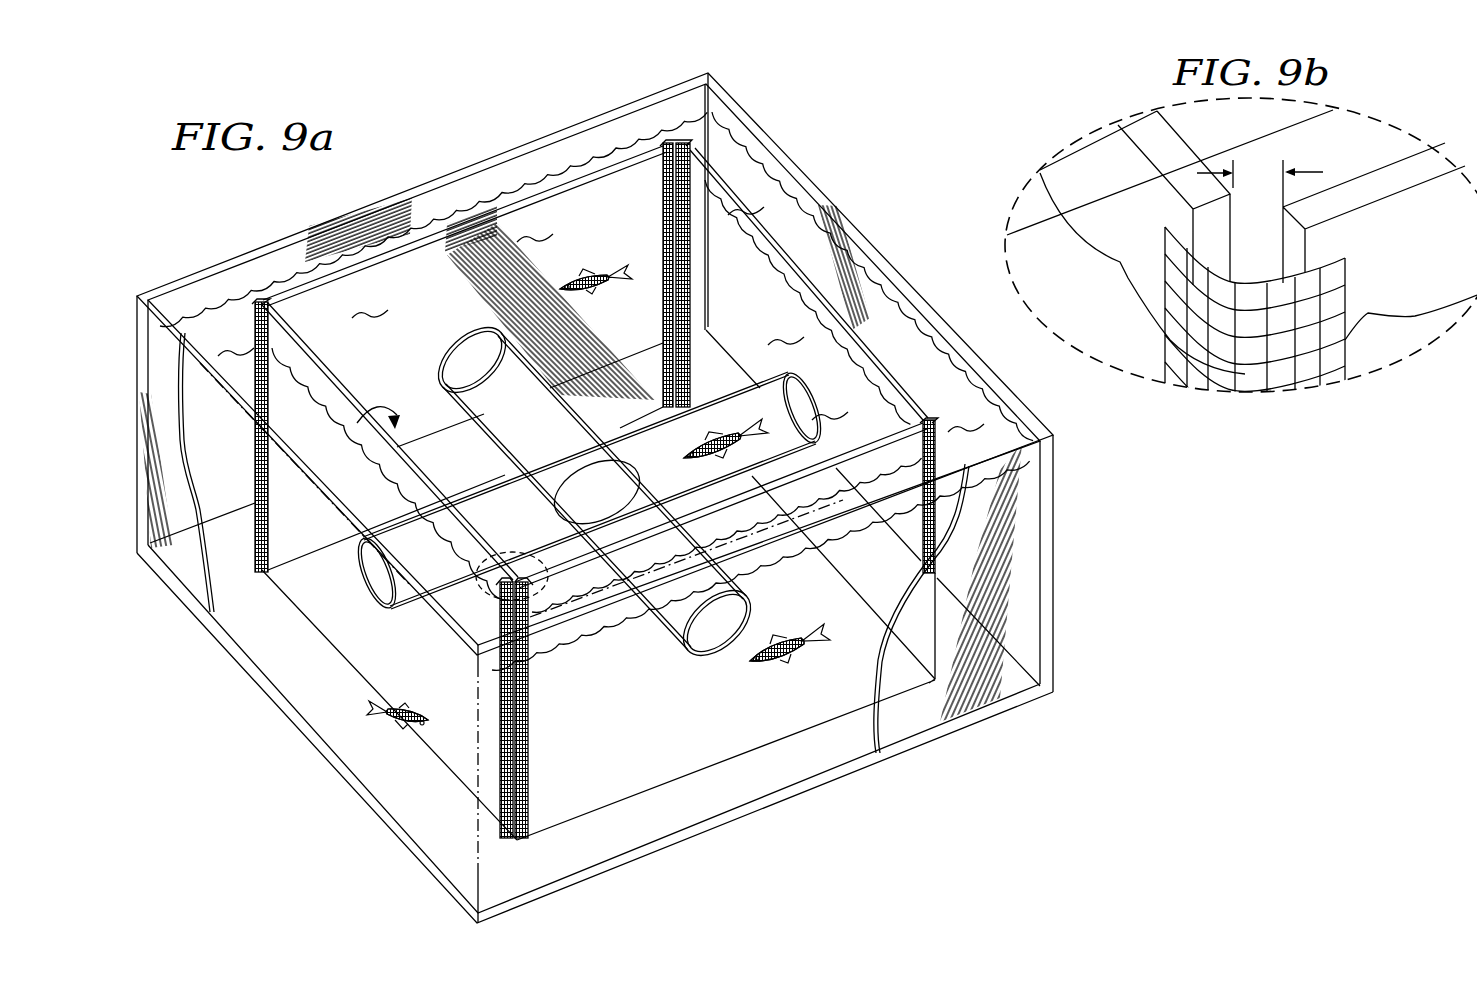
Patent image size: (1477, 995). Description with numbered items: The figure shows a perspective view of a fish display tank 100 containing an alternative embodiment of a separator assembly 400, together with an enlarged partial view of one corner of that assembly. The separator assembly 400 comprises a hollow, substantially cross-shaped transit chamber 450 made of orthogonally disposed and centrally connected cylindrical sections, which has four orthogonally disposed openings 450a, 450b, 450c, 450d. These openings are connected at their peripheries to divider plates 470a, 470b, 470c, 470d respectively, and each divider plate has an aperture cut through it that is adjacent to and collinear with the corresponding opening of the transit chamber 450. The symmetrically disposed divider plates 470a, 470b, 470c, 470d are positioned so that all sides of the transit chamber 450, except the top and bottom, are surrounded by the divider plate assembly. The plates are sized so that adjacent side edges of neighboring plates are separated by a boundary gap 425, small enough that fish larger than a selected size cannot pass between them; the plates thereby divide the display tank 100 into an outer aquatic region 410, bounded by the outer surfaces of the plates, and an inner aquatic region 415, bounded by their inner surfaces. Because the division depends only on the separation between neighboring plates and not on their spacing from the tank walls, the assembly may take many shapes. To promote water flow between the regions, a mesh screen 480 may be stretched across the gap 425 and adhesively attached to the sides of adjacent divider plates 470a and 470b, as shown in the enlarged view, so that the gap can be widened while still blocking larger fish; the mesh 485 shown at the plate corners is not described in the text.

In FIG. 9a, the fish display tank 100 is at (882, 247).
In FIG. 9a, the separator assembly 400 is at (583, 506).
In FIG. 9a, the aquatic region 410 is at (208, 282).
In FIG. 9a, the aquatic region 415 is at (365, 418).
In FIG. 9b, the boundary gap 425 is at (1300, 170).
In FIG. 9a, the transit chamber 450 is at (592, 511).
In FIG. 9a, the opening 450a is at (378, 605).
In FIG. 9a, the opening 450b is at (722, 661).
In FIG. 9a, the opening 450c is at (442, 360).
In FIG. 9a, the opening 450d is at (802, 392).
In FIG. 9a, the divider plate 470a is at (305, 607).
In FIG. 9a, the divider plate 470b is at (633, 795).
In FIG. 9a, the divider plate 470c is at (437, 236).
In FIG. 9a, the divider plate 470d is at (807, 290).
In FIG. 9a, the mesh screen 480 is at (662, 244).
In FIG. 9a, the mesh screen 485 is at (492, 766).
In FIG. 9b, the mesh screen 485 is at (1263, 282).